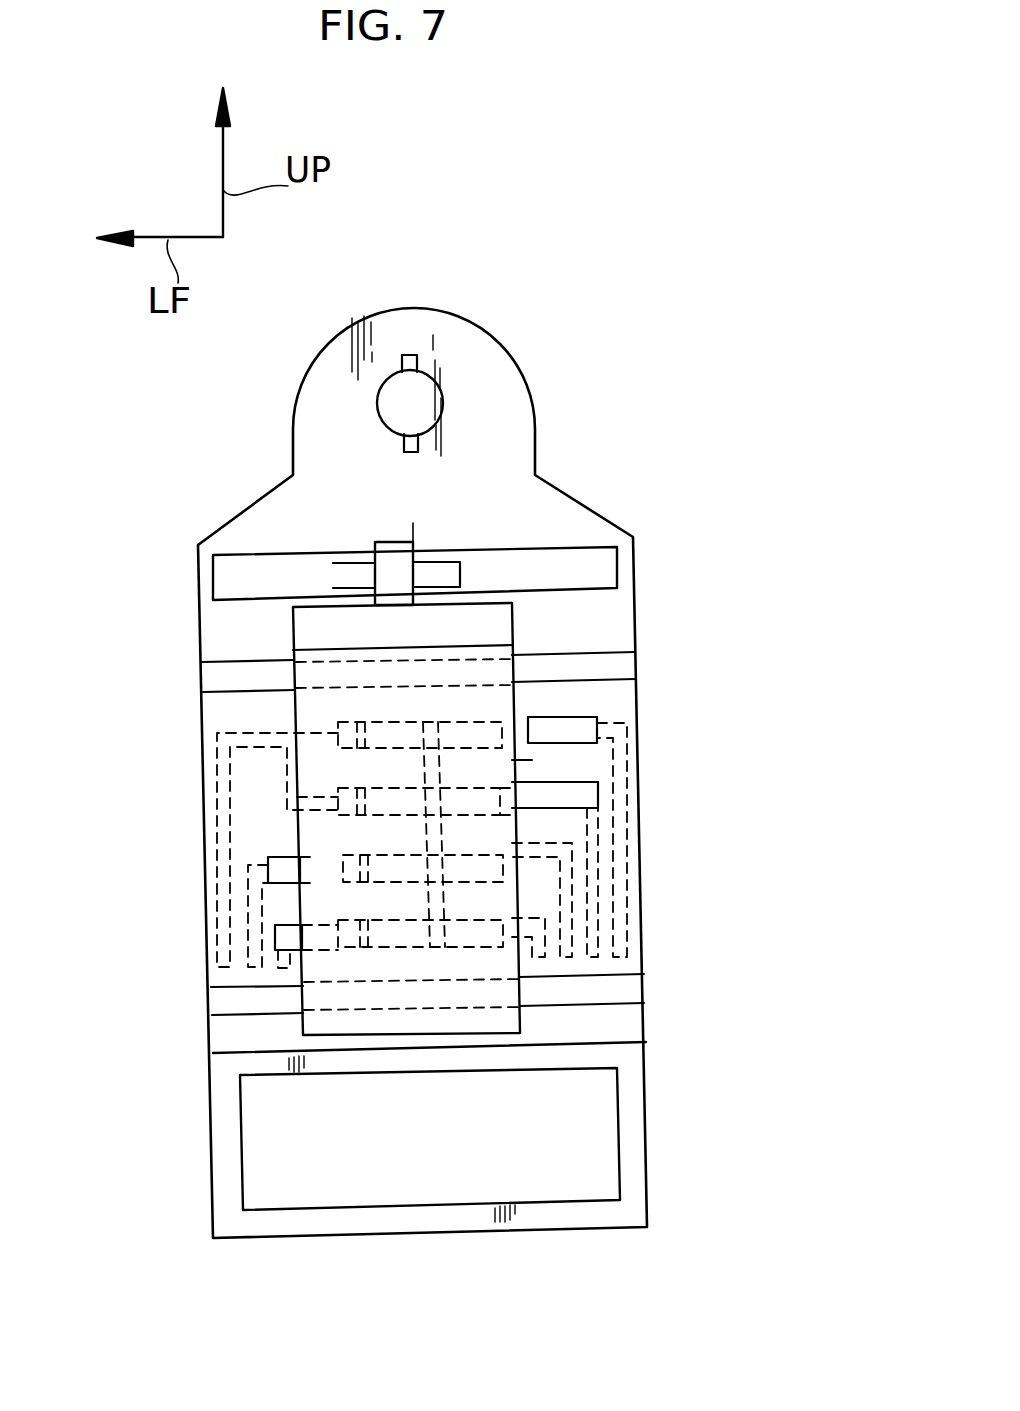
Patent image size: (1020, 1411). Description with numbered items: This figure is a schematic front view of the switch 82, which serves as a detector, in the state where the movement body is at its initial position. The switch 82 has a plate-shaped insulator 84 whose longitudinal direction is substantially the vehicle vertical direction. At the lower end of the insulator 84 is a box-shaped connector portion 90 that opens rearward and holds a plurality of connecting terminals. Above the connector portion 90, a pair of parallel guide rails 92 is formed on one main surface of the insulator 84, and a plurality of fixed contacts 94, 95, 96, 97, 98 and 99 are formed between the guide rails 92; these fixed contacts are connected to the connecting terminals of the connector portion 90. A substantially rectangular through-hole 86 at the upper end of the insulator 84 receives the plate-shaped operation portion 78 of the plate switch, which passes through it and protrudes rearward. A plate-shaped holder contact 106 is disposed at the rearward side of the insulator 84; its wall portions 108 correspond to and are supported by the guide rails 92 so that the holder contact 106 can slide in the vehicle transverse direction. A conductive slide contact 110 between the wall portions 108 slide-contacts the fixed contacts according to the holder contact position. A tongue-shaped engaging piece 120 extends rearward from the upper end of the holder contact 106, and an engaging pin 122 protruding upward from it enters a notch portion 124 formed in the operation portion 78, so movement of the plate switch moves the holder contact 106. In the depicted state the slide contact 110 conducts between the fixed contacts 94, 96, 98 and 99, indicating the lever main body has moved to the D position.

The switch 82 is at (557, 312).
The insulator 84 is at (512, 398).
The through-hole 86 is at (238, 568).
The operation portion 78 is at (360, 562).
The notch portion 124 is at (400, 575).
The engaging pin 122 is at (413, 523).
The engaging piece 120 is at (497, 604).
The guide rails 92 is at (218, 682).
The connector portion 90 is at (233, 1053).
The wall portions 108 is at (472, 664).
The slide contact 110 is at (440, 923).
The fixed contact 94 is at (500, 732).
The fixed contact 98 is at (500, 852).
The fixed contact 99 is at (500, 922).
The fixed contact 97 is at (268, 860).
The fixed contact 95 is at (588, 718).
The holder contact 106 is at (515, 762).
The fixed contact 96 is at (580, 798).